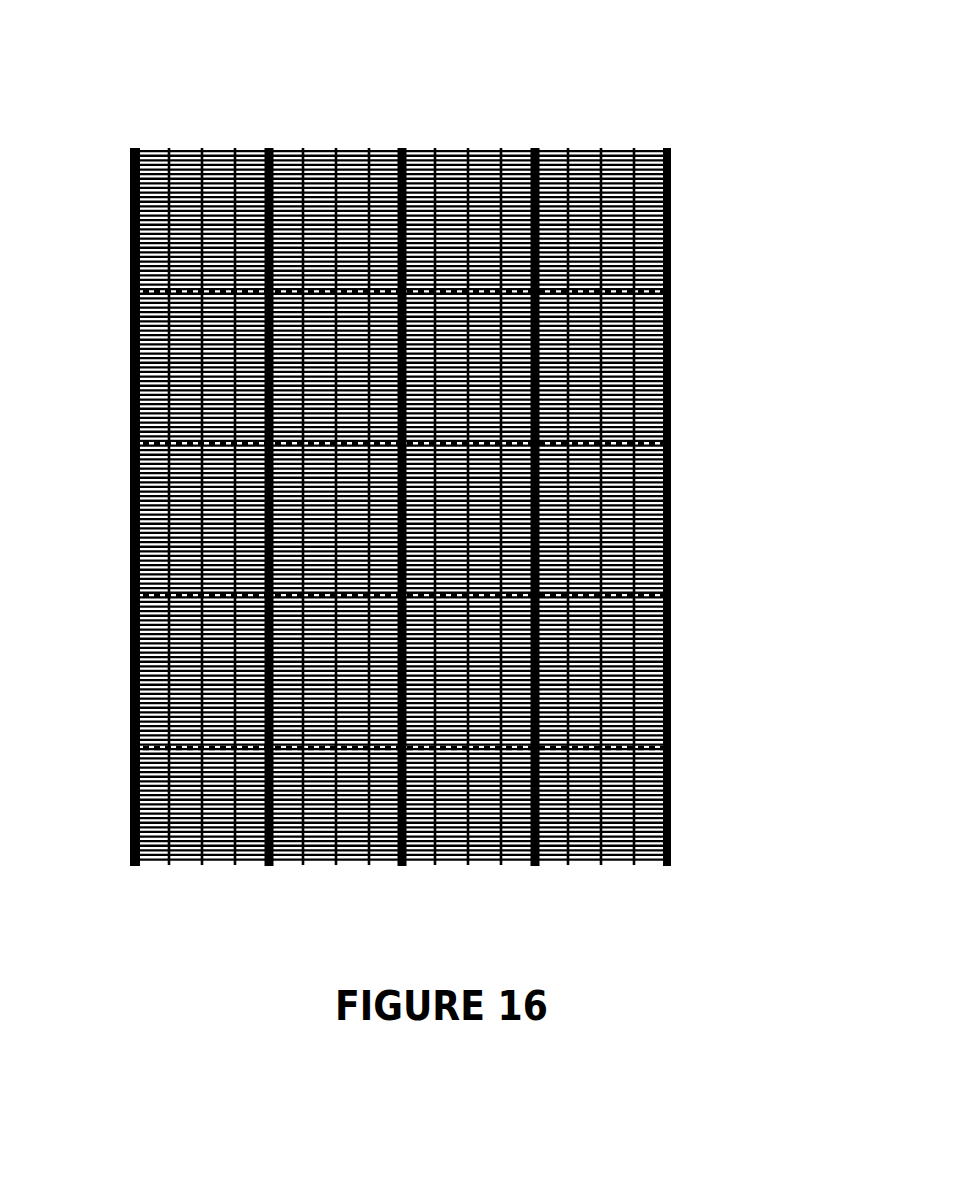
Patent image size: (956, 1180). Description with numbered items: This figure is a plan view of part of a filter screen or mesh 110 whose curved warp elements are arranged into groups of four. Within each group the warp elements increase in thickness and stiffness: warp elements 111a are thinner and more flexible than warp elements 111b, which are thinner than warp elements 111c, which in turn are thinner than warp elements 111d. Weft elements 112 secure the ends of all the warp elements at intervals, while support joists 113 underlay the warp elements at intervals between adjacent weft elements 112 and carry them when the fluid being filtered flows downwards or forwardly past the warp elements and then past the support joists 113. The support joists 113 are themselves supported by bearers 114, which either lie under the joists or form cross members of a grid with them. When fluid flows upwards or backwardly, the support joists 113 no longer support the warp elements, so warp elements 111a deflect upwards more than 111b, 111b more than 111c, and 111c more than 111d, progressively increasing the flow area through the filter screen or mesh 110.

The filter screen or mesh 110 is at (205, 75).
The warp element 111a is at (557, 446).
The warp element 111b is at (490, 446).
The warp element 111c is at (634, 446).
The warp element 111d is at (343, 446).
The weft element 112 is at (401, 447).
The support joist 113 is at (705, 446).
The bearer 114 is at (466, 498).